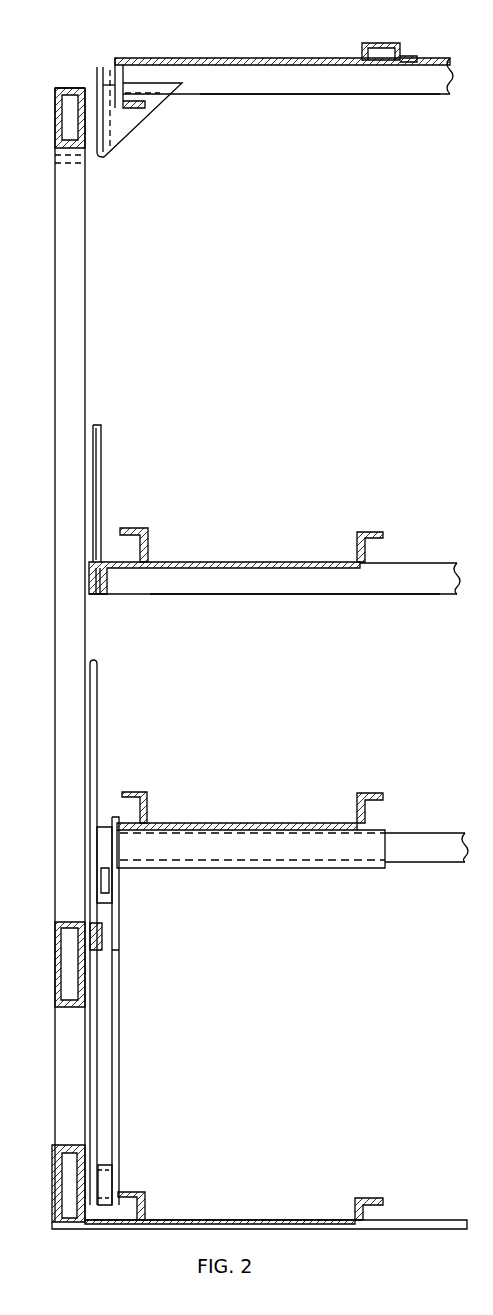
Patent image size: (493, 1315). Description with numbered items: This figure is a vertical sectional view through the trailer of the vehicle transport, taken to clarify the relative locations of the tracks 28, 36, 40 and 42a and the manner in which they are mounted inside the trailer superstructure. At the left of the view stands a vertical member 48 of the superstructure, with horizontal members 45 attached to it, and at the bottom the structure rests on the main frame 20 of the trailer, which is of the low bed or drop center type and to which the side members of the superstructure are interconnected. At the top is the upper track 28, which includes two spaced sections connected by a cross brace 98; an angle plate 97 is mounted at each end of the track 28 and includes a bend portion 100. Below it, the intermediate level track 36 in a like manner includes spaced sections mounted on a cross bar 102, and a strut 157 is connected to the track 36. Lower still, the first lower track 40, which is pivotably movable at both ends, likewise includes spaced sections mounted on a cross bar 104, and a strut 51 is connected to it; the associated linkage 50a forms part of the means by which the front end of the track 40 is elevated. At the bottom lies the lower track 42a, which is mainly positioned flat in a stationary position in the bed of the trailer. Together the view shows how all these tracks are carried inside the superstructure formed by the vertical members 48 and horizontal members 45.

The main frame 20 is at (53, 1178).
The upper track 28 is at (250, 60).
The intermediate level track 36 is at (232, 562).
The first lower track 40 is at (265, 823).
The lower track 42a is at (223, 1217).
The horizontal member 45 is at (55, 105).
The vertical member 48 is at (78, 347).
The linkage 50a is at (107, 995).
The strut 51 is at (97, 708).
The angle plate 97 is at (97, 83).
The cross brace 98 is at (291, 78).
The bend portion 100 is at (98, 158).
The cross bar 102 is at (238, 585).
The cross bar 104 is at (407, 853).
The strut 157 is at (102, 470).